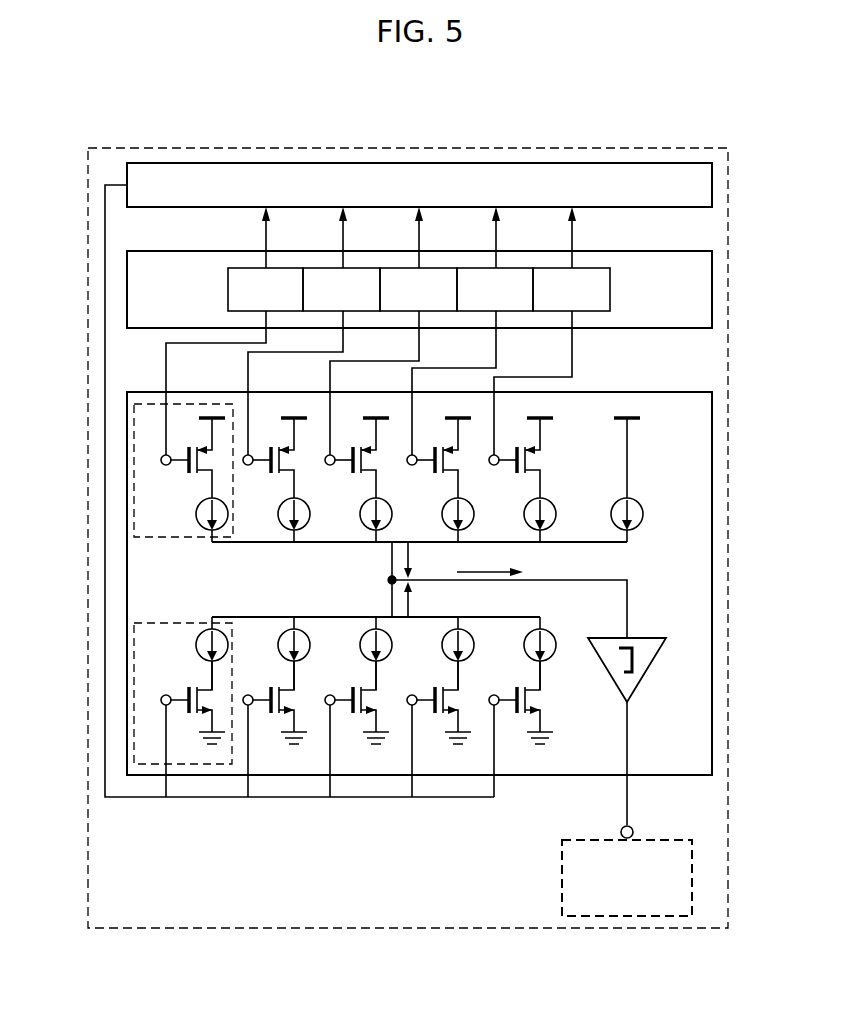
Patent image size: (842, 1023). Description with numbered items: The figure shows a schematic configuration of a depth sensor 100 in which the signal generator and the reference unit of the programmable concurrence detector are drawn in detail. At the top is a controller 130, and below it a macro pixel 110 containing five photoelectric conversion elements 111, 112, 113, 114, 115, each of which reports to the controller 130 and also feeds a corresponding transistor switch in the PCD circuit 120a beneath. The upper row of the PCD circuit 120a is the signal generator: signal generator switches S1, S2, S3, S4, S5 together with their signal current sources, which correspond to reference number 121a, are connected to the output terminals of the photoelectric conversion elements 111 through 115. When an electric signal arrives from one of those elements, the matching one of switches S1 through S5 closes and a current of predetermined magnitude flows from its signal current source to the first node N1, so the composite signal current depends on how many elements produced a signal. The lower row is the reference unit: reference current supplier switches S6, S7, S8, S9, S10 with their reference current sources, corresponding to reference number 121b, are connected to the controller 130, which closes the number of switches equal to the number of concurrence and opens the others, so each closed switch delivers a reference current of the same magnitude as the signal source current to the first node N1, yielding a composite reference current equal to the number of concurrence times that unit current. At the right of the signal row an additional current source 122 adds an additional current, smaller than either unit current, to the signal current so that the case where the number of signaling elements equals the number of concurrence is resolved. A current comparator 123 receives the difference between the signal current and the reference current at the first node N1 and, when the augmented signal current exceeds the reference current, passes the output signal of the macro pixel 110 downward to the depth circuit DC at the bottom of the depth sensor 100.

The depth sensor 100 is at (585, 148).
The macro pixel 110 is at (461, 289).
The photoelectric conversion element 111 is at (248, 300).
The photoelectric conversion element 112 is at (325, 300).
The photoelectric conversion element 113 is at (401, 300).
The photoelectric conversion element 114 is at (478, 300).
The photoelectric conversion element 115 is at (554, 300).
The programmable concurrence detector (PCD) circuit 120a is at (712, 469).
The signal generator switches and signal current sources 121a is at (134, 513).
The reference current supplier switches and reference current sources 121b is at (134, 645).
The additional current source 122 is at (637, 528).
The current comparator 123 is at (650, 664).
The controller 130 is at (712, 187).
The depth circuit DC is at (692, 868).
The first node N1 is at (491, 590).
The signal generator switch S1 is at (190, 458).
The signal generator switch S2 is at (272, 458).
The signal generator switch S3 is at (354, 458).
The signal generator switch S4 is at (436, 458).
The signal generator switch S5 is at (518, 458).
The reference current supplier switch S6 is at (190, 729).
The reference current supplier switch S7 is at (272, 729).
The reference current supplier switch S8 is at (354, 729).
The reference current supplier switch S9 is at (436, 729).
The reference current supplier switch S10 is at (515, 729).